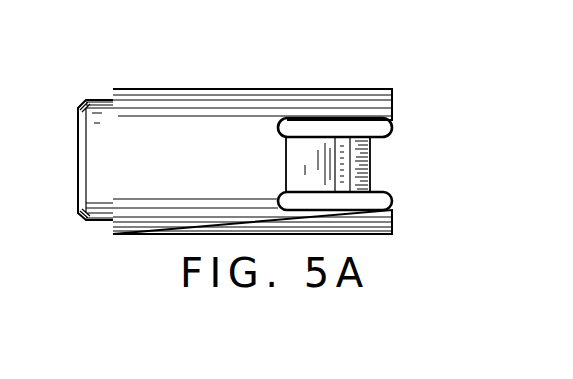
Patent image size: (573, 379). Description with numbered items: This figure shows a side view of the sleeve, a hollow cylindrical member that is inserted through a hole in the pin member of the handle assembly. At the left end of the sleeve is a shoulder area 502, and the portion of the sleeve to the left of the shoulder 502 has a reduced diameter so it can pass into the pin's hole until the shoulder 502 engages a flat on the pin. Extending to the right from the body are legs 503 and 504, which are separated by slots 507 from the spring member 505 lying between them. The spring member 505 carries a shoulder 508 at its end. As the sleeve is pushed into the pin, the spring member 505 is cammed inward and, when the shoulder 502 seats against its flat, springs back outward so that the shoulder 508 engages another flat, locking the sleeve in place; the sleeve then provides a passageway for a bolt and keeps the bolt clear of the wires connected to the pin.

The shoulder area 502 is at (112, 200).
The leg 503 is at (363, 107).
The leg 504 is at (360, 220).
The spring member 505 is at (307, 160).
The slot 507 is at (365, 130).
The shoulder 508 is at (365, 168).